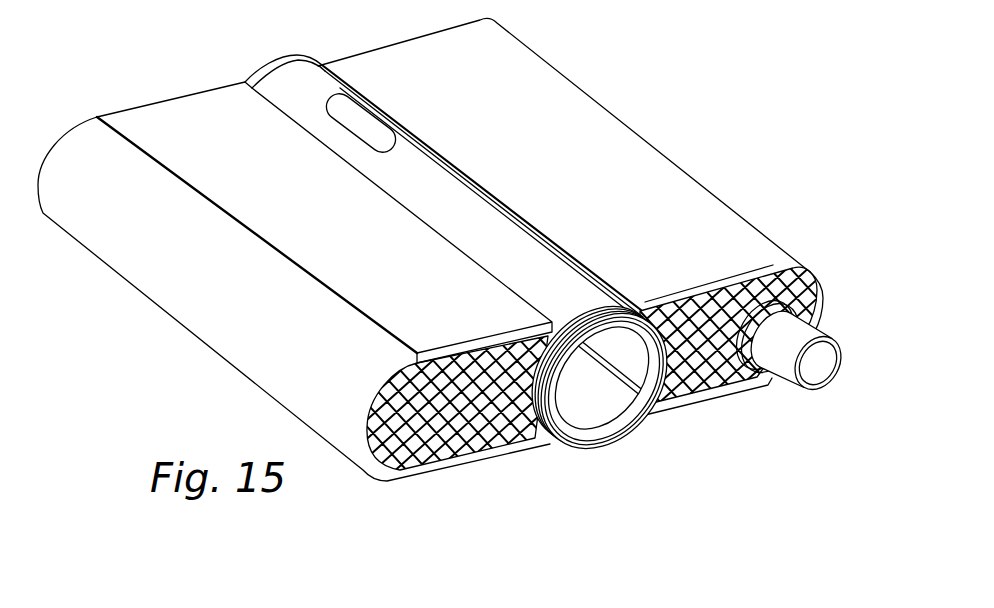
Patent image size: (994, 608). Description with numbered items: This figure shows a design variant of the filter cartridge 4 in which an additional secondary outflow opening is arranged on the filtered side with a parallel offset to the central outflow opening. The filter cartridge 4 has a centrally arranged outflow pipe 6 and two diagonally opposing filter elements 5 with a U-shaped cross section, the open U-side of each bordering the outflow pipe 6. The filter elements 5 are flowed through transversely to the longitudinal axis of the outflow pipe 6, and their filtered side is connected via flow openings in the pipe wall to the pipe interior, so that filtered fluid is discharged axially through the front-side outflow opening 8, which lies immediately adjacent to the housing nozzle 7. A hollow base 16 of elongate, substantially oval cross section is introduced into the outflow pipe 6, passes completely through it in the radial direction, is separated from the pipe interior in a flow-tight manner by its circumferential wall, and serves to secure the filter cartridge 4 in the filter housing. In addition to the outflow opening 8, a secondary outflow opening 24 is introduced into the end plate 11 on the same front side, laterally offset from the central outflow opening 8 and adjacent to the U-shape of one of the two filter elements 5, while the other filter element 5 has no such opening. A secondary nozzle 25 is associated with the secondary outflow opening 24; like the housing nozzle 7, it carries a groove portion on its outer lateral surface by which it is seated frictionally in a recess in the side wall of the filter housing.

The filter cartridge 4 is at (693, 63).
The filter element 5 is at (179, 113).
The outflow pipe 6 is at (490, 247).
The housing nozzle 7 is at (613, 442).
The outflow opening 8 is at (578, 402).
The end plate 11 is at (465, 441).
The hollow base 16 is at (368, 133).
The secondary outflow opening 24 is at (777, 328).
The secondary nozzle 25 is at (817, 383).